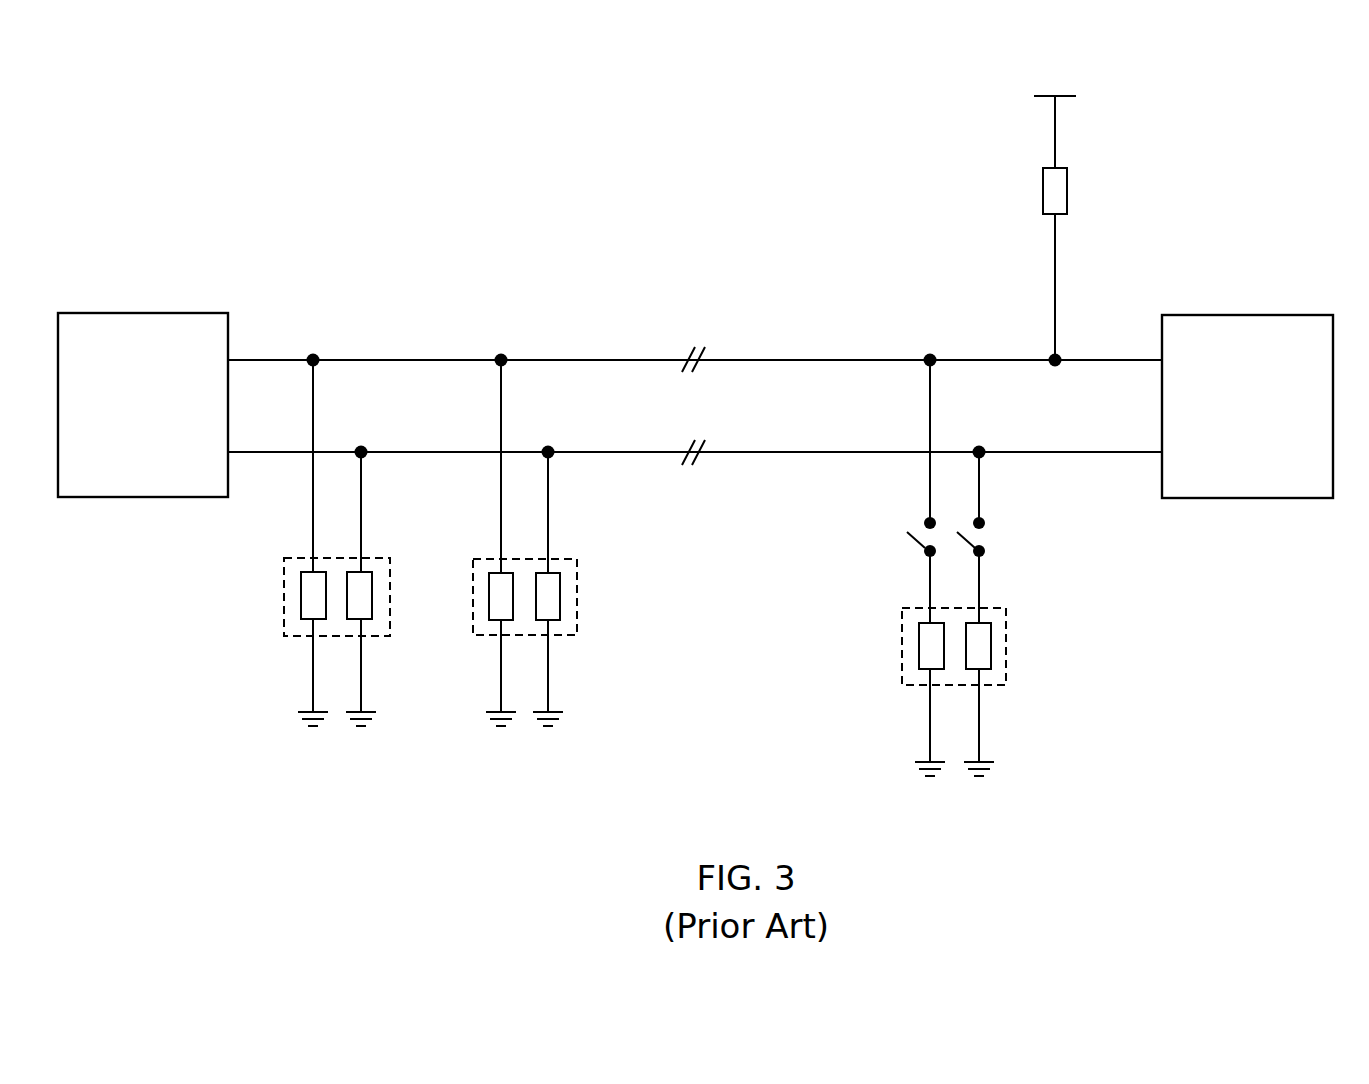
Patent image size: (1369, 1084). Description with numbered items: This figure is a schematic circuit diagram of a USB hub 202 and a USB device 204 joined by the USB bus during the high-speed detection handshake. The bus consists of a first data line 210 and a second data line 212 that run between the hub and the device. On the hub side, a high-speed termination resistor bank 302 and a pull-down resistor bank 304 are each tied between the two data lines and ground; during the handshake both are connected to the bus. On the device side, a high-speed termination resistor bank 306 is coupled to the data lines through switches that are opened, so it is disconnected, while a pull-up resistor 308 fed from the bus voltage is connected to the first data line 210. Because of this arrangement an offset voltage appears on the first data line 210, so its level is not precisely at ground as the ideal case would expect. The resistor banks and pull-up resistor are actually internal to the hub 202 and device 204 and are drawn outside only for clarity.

The USB hub 202 is at (135, 313).
The USB device 204 is at (1240, 314).
The first data line 210 is at (785, 361).
The second data line 212 is at (822, 453).
The high-speed termination resistor bank 302 is at (390, 596).
The pull-down resistor bank 304 is at (577, 597).
The high-speed termination resistor bank 306 is at (1006, 646).
The pull-up resistor 308 is at (1067, 190).